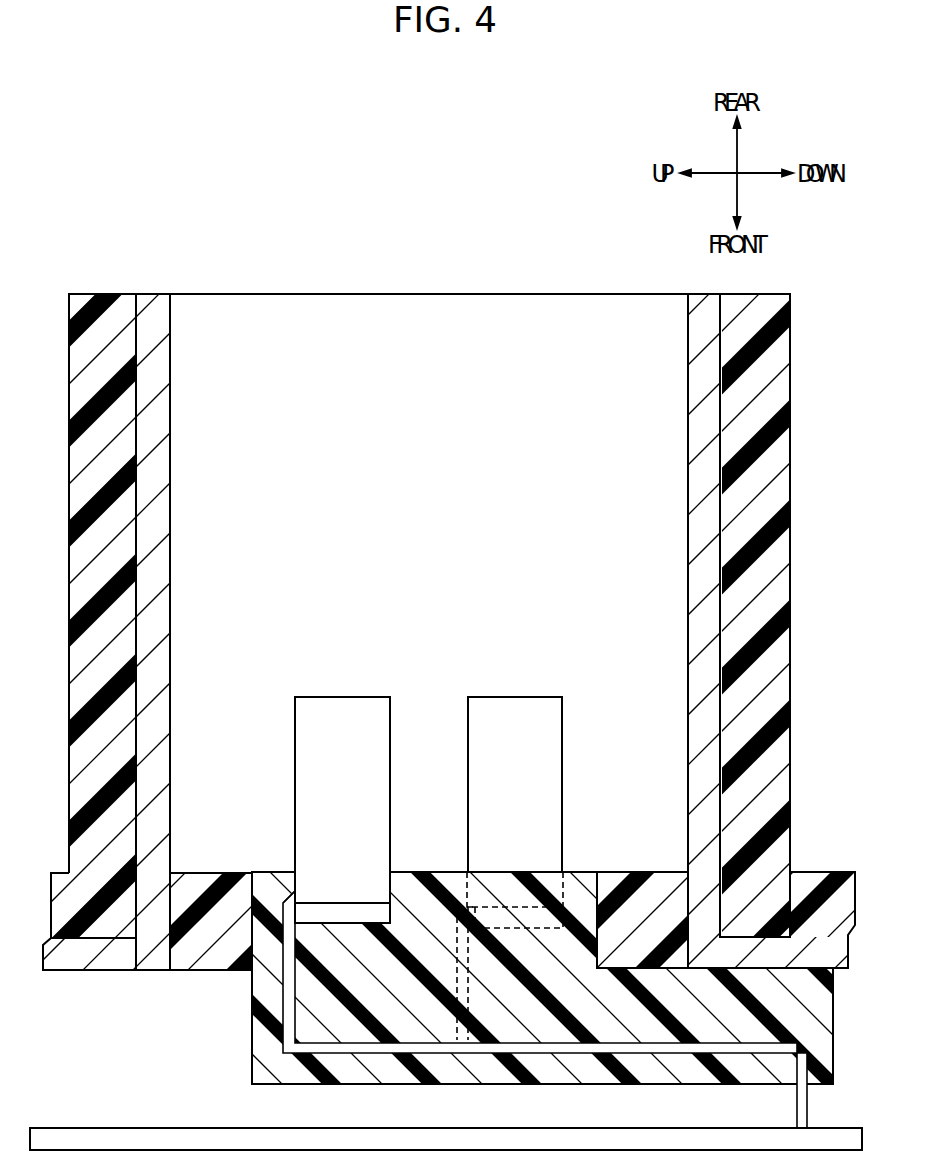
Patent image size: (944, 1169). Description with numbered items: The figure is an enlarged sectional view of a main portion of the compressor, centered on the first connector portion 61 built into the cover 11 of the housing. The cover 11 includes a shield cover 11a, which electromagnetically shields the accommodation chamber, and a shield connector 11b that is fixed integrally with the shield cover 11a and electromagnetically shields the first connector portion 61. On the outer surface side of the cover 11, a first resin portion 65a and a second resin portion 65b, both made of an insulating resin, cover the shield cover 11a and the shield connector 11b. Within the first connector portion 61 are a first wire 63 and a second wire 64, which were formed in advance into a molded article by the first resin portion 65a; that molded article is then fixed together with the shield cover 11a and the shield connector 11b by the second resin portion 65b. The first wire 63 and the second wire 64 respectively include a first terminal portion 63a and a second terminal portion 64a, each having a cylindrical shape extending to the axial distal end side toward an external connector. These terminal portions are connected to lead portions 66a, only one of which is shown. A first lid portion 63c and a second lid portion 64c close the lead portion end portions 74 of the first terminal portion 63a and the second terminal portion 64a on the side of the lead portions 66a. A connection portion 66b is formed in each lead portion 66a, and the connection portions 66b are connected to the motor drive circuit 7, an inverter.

The motor drive circuit 7 is at (183, 1138).
The cover 11 is at (472, 584).
The shield cover 11a is at (96, 950).
The shield connector 11b is at (152, 480).
The first connector portion 61 is at (472, 584).
The first wire 63 is at (351, 763).
The first terminal portion 63a is at (325, 794).
The first lid portion 63c is at (345, 915).
The second wire 64 is at (527, 766).
The second terminal portion 64a is at (498, 794).
The second lid portion 64c is at (522, 917).
The first resin portion 65a is at (695, 1062).
The second resin portion 65b is at (198, 873).
The lead portion 66a is at (593, 1043).
The connection portion 66b is at (803, 1108).
The lead portion end portion 74 is at (309, 908).